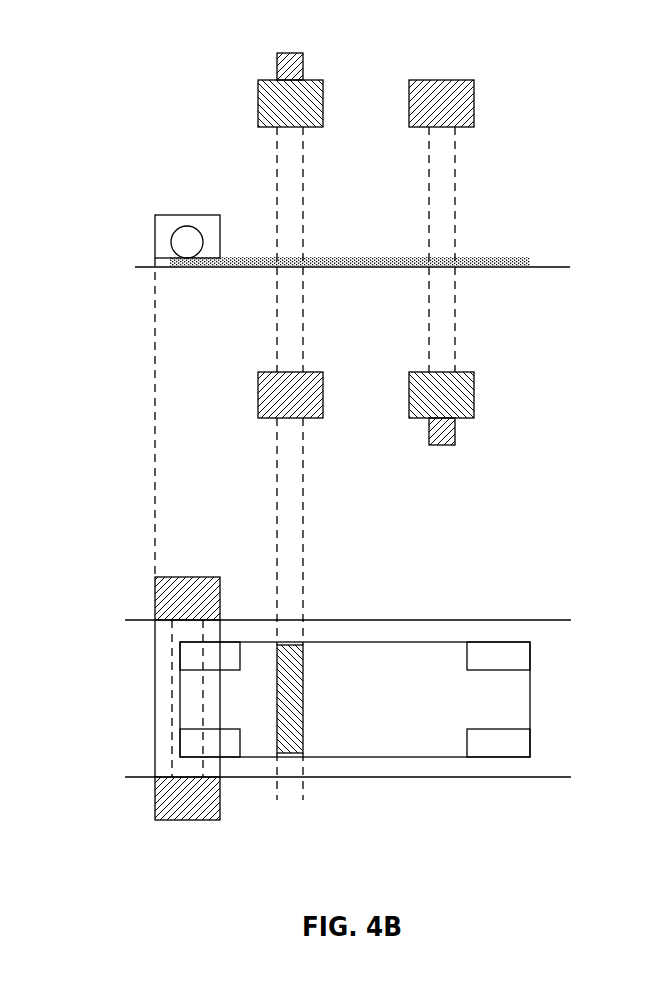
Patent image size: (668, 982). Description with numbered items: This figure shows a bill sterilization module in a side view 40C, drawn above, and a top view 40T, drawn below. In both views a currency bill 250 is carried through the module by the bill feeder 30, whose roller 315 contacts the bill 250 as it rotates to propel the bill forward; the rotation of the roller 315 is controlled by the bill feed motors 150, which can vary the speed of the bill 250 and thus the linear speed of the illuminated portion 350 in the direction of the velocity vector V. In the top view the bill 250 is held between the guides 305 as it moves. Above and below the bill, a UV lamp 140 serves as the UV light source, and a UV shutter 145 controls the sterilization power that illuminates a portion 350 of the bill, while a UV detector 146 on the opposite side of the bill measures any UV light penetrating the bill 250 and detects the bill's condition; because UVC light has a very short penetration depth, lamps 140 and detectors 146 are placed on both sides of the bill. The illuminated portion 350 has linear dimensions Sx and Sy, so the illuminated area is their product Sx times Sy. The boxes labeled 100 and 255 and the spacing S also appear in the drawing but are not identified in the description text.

The bill feeder 30 is at (188, 214).
The side view 40C is at (121, 80).
The top view 40T is at (124, 574).
The component (die) 100 is at (355, 700).
The UV lamp 140 is at (304, 62).
The UV shutter 145 is at (323, 100).
The UV detector 146 is at (474, 88).
The bill feed motor 150 is at (221, 596).
The currency bill 250 is at (476, 258).
The substrate edge 255 is at (530, 652).
The guides 305 is at (138, 619).
The roller 315 is at (183, 245).
The portion of the currency bill 350 is at (288, 257).
The nozzle spacing S is at (310, 165).
The linear dimension Sx is at (277, 793).
The linear dimension Sy is at (318, 743).
The velocity vector V is at (541, 698).